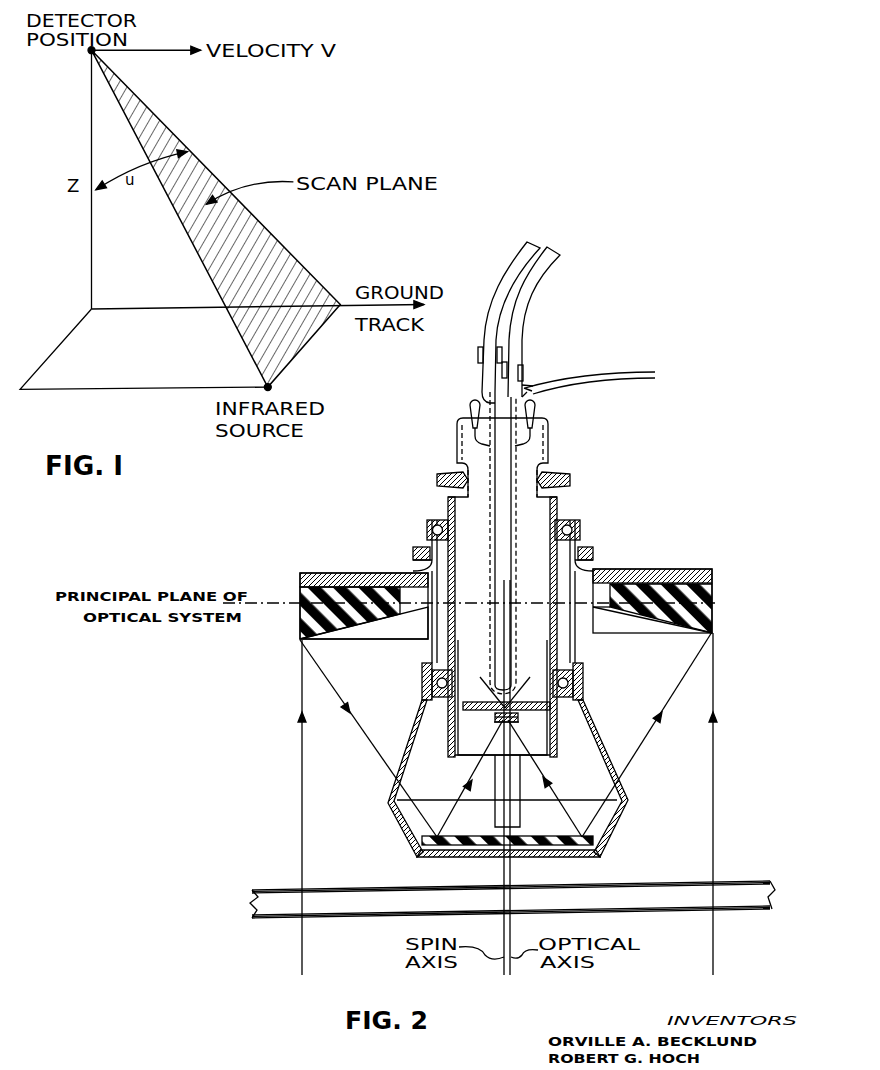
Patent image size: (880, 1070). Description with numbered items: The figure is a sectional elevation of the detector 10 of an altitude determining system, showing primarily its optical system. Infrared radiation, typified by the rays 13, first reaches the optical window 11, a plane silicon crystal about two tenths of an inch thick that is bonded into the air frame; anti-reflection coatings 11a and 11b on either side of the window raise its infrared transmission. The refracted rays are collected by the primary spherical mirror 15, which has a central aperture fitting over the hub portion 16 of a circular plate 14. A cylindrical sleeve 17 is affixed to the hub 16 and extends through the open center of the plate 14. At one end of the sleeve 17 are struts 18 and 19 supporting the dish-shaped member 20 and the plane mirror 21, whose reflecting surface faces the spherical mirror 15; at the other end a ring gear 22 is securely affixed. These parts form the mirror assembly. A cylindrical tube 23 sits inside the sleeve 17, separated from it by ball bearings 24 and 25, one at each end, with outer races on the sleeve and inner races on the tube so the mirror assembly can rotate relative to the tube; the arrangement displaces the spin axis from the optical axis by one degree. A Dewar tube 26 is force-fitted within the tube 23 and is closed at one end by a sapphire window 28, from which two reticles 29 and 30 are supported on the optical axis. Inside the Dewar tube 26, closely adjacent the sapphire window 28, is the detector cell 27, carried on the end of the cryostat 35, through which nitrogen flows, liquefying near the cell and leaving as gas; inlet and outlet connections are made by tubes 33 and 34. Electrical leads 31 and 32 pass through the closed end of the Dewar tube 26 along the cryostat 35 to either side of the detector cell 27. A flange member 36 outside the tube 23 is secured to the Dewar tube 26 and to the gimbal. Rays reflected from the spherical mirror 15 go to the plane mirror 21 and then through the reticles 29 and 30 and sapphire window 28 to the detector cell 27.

The detector 10 is at (289, 663).
The optical window 11 is at (252, 902).
The anti-reflection coating 11a is at (282, 918).
The anti-reflection coating 11b is at (268, 890).
The rays 13 is at (303, 965).
The circular plate 14 is at (300, 582).
The spherical mirror 15 is at (300, 622).
The hub portion 16 is at (416, 608).
The cylindrical sleeve 17 is at (580, 535).
The strut 18 is at (428, 703).
The strut 19 is at (608, 748).
The dish-shaped member 20 is at (600, 846).
The plane mirror 21 is at (417, 848).
The ring gear 22 is at (595, 553).
The cylindrical tube 23 is at (556, 500).
The ball bearing 24 is at (440, 522).
The ball bearing 25 is at (420, 732).
The Dewar tube 26 is at (507, 463).
The detector cell 27 is at (586, 708).
The sapphire window 28 is at (517, 713).
The reticle 29 is at (495, 718).
The reticle 30 is at (502, 724).
The lead 31 is at (527, 385).
The lead 32 is at (540, 388).
The tube 33 is at (525, 243).
The tube 34 is at (556, 262).
The cryostat 35 is at (548, 445).
The flange member 36 is at (440, 476).